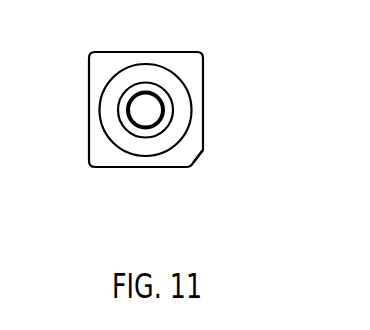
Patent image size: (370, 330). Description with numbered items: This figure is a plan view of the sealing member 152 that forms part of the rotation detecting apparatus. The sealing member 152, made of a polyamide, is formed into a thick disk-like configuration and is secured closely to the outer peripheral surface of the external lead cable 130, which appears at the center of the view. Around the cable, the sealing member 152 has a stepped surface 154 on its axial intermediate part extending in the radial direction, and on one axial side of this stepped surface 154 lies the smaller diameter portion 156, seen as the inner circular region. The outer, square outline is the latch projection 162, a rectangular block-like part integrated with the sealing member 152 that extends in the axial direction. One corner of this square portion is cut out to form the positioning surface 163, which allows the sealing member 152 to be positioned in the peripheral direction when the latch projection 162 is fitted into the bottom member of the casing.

The sealing member 152 is at (211, 46).
The latch projection 162 is at (119, 62).
The positioning surface 163 is at (197, 160).
The stepped surface 154 is at (141, 143).
The smaller diameter portion 156 is at (168, 105).
The external lead cable 130 is at (143, 108).